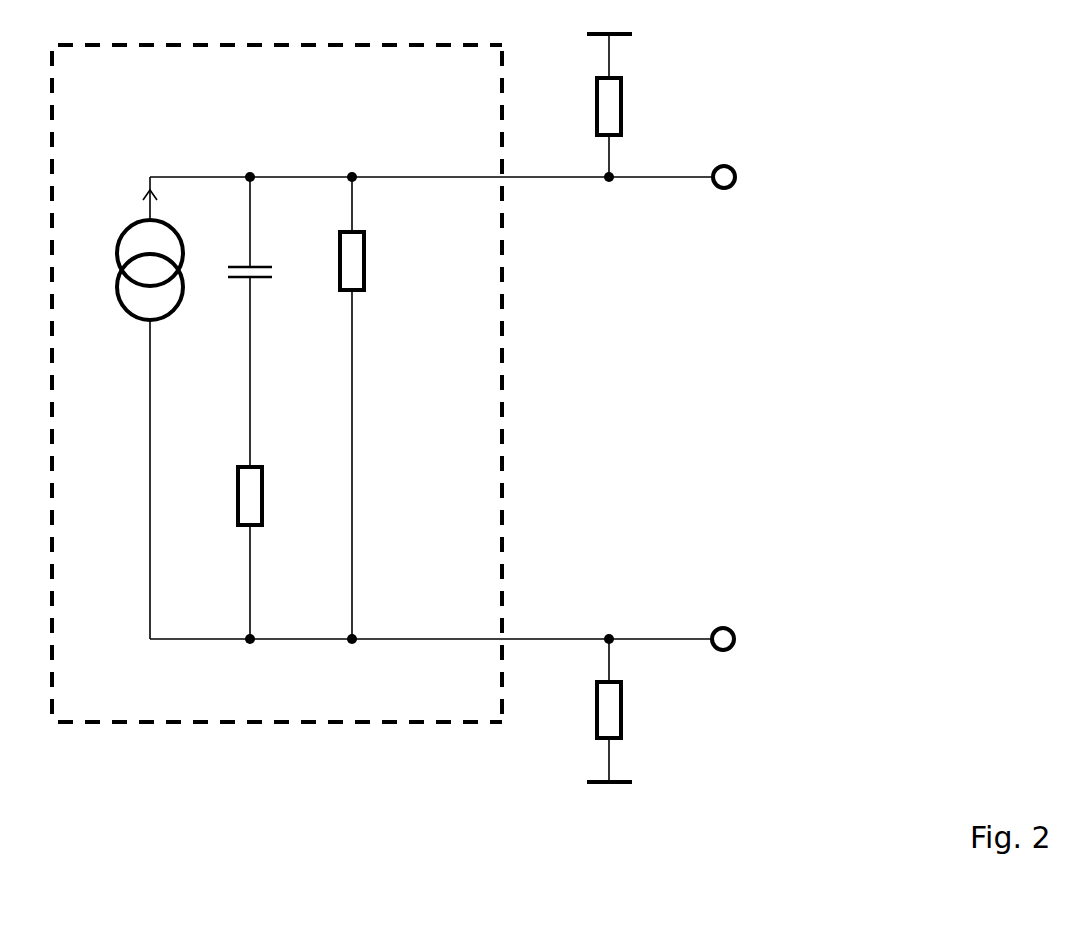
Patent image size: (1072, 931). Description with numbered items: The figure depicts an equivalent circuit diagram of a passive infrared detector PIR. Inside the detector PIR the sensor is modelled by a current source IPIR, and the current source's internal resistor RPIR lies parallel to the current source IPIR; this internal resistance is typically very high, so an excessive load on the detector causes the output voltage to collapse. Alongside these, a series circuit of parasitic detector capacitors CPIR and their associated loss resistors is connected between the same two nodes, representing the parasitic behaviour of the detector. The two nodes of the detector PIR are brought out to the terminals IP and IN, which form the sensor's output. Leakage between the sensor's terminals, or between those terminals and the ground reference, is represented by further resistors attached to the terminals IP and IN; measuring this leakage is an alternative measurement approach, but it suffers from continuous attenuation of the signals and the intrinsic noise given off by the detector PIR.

The passive infrared detector PIR is at (277, 383).
The current source IPIR is at (133, 251).
The parasitic detector capacitors CPIR is at (280, 291).
The internal resistor of the current source RPIR is at (388, 278).
The positive input terminal IP is at (741, 174).
The negative input terminal IN is at (740, 634).